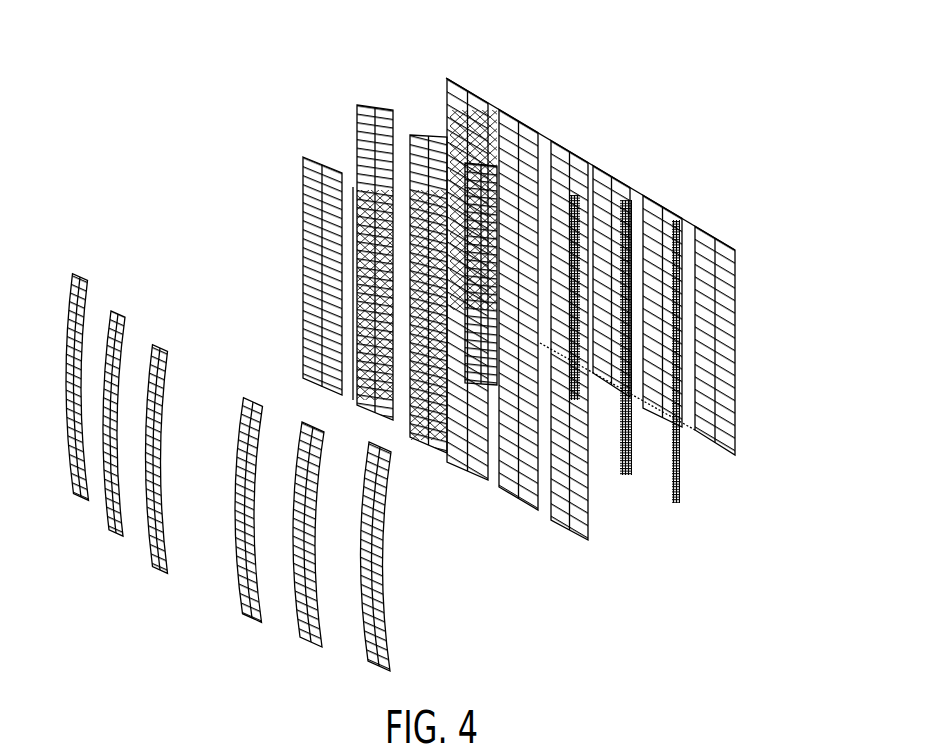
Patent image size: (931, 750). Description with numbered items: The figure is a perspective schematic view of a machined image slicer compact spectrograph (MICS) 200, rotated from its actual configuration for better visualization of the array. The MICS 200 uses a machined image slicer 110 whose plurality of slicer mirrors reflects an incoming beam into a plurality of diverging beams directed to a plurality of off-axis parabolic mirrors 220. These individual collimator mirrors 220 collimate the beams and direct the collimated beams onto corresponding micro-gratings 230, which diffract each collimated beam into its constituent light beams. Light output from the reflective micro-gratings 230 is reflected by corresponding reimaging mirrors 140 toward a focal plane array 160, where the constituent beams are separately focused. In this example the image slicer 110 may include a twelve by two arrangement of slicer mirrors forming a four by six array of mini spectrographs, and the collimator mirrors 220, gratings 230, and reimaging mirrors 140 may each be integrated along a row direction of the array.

The machined image slicer compact spectrograph (MICS) 200 is at (562, 23).
The image slicer 110 is at (376, 361).
The reimaging mirrors 140 is at (633, 562).
The focal plane array 160 is at (734, 250).
The off-axis parabolic mirrors (OAPs) 220 is at (81, 271).
The micro-gratings 230 is at (358, 138).